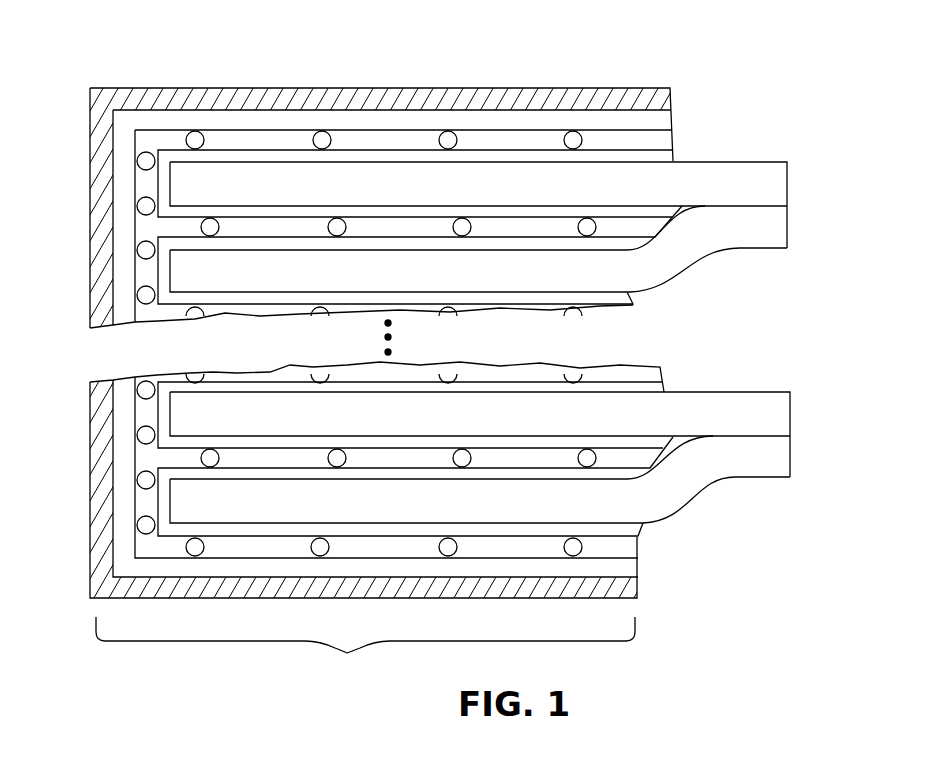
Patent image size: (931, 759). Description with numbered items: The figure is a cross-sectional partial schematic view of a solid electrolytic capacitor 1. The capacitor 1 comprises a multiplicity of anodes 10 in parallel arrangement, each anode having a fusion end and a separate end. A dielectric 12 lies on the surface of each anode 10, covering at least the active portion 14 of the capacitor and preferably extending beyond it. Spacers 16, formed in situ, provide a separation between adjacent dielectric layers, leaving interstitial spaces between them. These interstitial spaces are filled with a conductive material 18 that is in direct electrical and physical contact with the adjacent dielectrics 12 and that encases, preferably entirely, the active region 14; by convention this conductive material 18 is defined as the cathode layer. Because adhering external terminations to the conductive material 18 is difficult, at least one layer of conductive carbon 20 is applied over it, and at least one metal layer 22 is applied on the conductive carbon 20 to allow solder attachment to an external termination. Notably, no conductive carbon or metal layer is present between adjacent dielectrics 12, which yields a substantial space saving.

The capacitor 1 is at (193, 57).
The anodes 10 is at (710, 172).
The dielectric 12 is at (535, 157).
The active portion 14 is at (342, 665).
The spacers 16 is at (448, 138).
The conductive material 18 is at (268, 142).
The conductive carbon layer 20 is at (488, 115).
The metal layer 22 is at (367, 97).